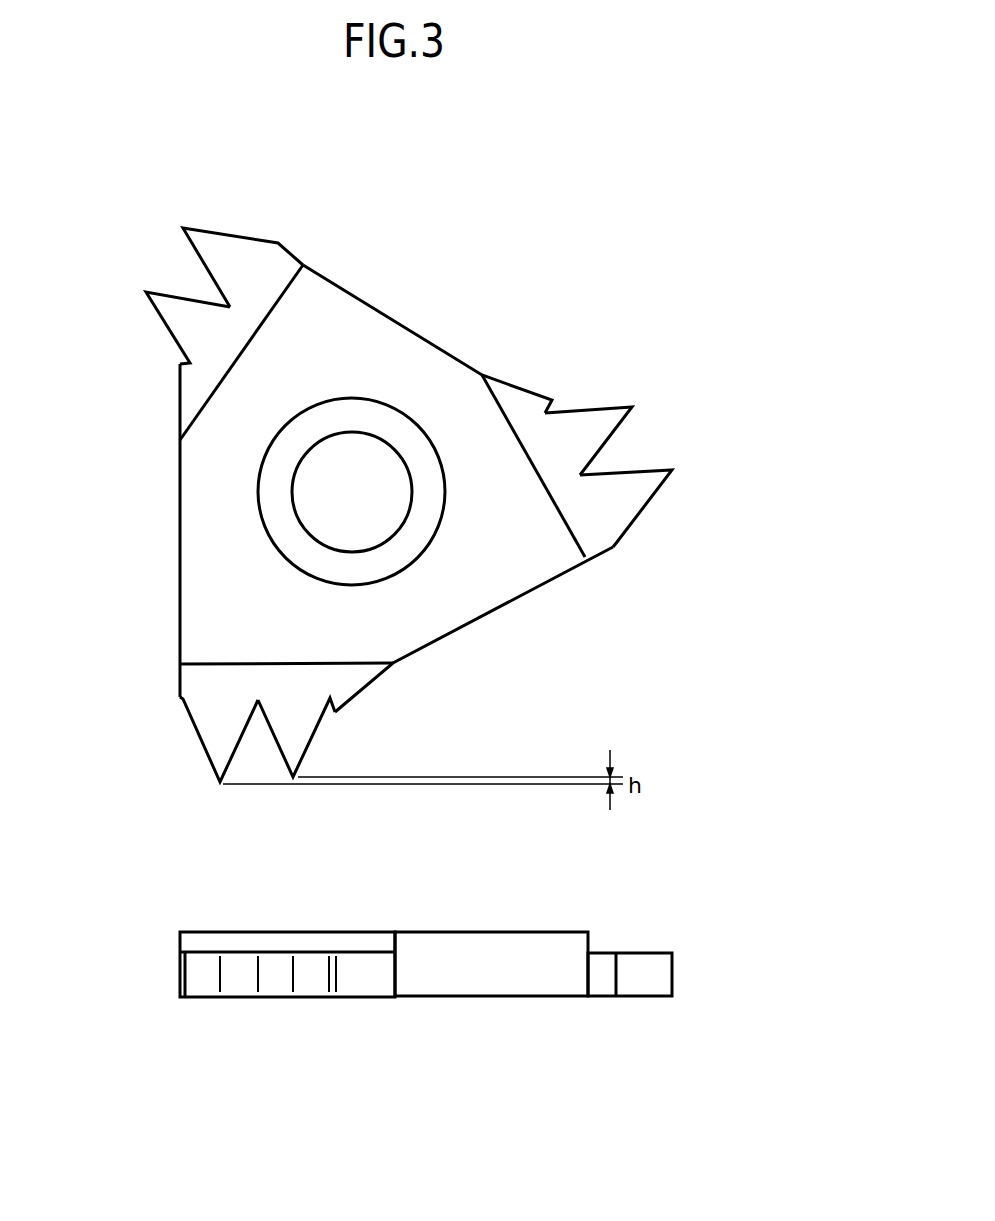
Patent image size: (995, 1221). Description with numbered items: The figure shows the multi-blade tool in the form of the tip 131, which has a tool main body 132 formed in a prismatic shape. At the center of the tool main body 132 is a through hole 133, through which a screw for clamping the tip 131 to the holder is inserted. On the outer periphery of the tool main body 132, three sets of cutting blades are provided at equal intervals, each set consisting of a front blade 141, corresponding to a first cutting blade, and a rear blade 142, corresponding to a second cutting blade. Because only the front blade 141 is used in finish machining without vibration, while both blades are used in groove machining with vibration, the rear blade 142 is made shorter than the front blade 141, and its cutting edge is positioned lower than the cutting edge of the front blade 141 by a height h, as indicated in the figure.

The tip 131 is at (460, 255).
The tool main body 132 is at (430, 360).
The through hole 133 is at (328, 507).
The front blade 141 is at (227, 247).
The rear blade 142 is at (172, 313).